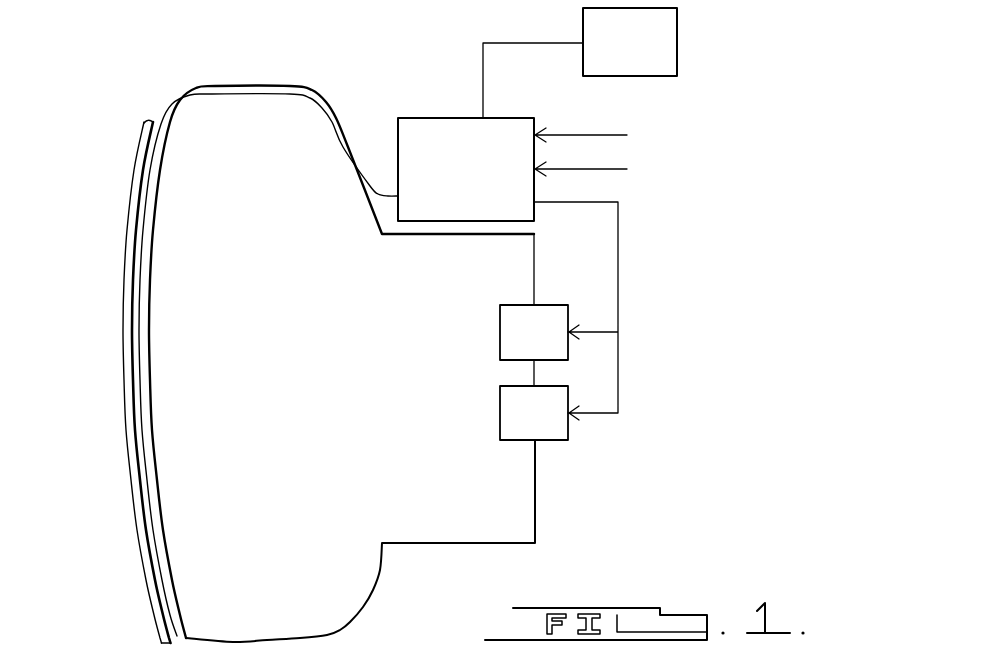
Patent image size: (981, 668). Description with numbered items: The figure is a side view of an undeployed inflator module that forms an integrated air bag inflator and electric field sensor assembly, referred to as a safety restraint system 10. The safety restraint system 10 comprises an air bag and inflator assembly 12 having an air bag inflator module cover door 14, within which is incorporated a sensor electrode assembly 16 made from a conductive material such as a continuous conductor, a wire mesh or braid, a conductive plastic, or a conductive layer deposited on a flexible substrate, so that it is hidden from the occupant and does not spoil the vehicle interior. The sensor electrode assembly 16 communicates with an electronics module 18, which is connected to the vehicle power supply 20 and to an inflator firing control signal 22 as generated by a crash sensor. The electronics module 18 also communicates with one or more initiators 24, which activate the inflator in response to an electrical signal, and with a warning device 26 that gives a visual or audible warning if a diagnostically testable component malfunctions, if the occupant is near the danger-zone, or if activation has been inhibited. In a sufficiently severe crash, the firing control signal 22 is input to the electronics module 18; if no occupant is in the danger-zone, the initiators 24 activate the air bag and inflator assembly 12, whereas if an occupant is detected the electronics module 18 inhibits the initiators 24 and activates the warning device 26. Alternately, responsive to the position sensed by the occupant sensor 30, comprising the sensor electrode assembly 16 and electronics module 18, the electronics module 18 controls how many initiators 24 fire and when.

The safety restraint system 10 is at (134, 592).
The air bag and inflator assembly 12 is at (347, 566).
The air bag inflator module cover door 14 is at (143, 157).
The sensor electrode assembly 16 is at (142, 275).
The electronics module 18 is at (417, 128).
The vehicle power supply 20 is at (704, 116).
The inflator firing control signal 22 is at (689, 174).
The initiators 24 is at (553, 318).
The warning device 26 is at (675, 12).
The occupant sensor 30 is at (235, 40).